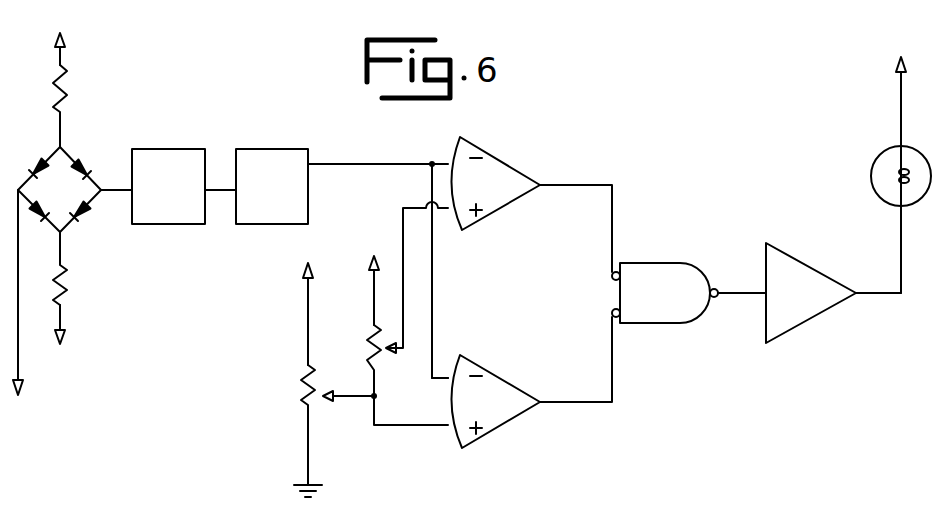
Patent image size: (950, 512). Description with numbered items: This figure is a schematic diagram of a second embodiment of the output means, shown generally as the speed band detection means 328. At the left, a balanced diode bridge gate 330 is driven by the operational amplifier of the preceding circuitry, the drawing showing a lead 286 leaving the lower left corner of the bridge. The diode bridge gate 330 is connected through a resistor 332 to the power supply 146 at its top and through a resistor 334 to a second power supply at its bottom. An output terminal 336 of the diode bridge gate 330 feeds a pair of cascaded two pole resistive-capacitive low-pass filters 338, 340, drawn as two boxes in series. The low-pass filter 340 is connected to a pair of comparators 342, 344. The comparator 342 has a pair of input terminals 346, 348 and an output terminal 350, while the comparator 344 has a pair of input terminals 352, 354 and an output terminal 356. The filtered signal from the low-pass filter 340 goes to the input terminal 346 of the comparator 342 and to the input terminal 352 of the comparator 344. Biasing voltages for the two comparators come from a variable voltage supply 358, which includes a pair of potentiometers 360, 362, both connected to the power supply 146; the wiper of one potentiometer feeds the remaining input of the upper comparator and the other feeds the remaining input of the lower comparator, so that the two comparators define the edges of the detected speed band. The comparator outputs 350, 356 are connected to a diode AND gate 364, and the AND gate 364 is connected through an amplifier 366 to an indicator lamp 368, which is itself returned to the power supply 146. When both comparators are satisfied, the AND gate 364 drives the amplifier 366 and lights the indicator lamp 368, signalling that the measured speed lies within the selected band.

The power supply 146 is at (898, 62).
The conductor 286 is at (22, 393).
The speed band detection means 328 is at (655, 172).
The balanced diode bridge gate 330 is at (70, 148).
The resistor 332 is at (65, 82).
The resistor 334 is at (65, 295).
The output terminal 336 is at (115, 197).
The low-pass filter 338 is at (170, 160).
The low-pass filter 340 is at (272, 160).
The comparator 342 is at (495, 168).
The comparator 344 is at (510, 408).
The input terminal 346 is at (390, 163).
The input terminal 348 is at (403, 230).
The output terminal 350 is at (570, 190).
The input terminal 352 is at (450, 385).
The input terminal 354 is at (415, 432).
The output terminal 356 is at (598, 405).
The variable voltage supply 358 is at (286, 378).
The potentiometer 360 is at (300, 385).
The potentiometer 362 is at (372, 350).
The diode AND gate 364 is at (665, 258).
The amplifier 366 is at (790, 283).
The indicator lamp 368 is at (873, 167).